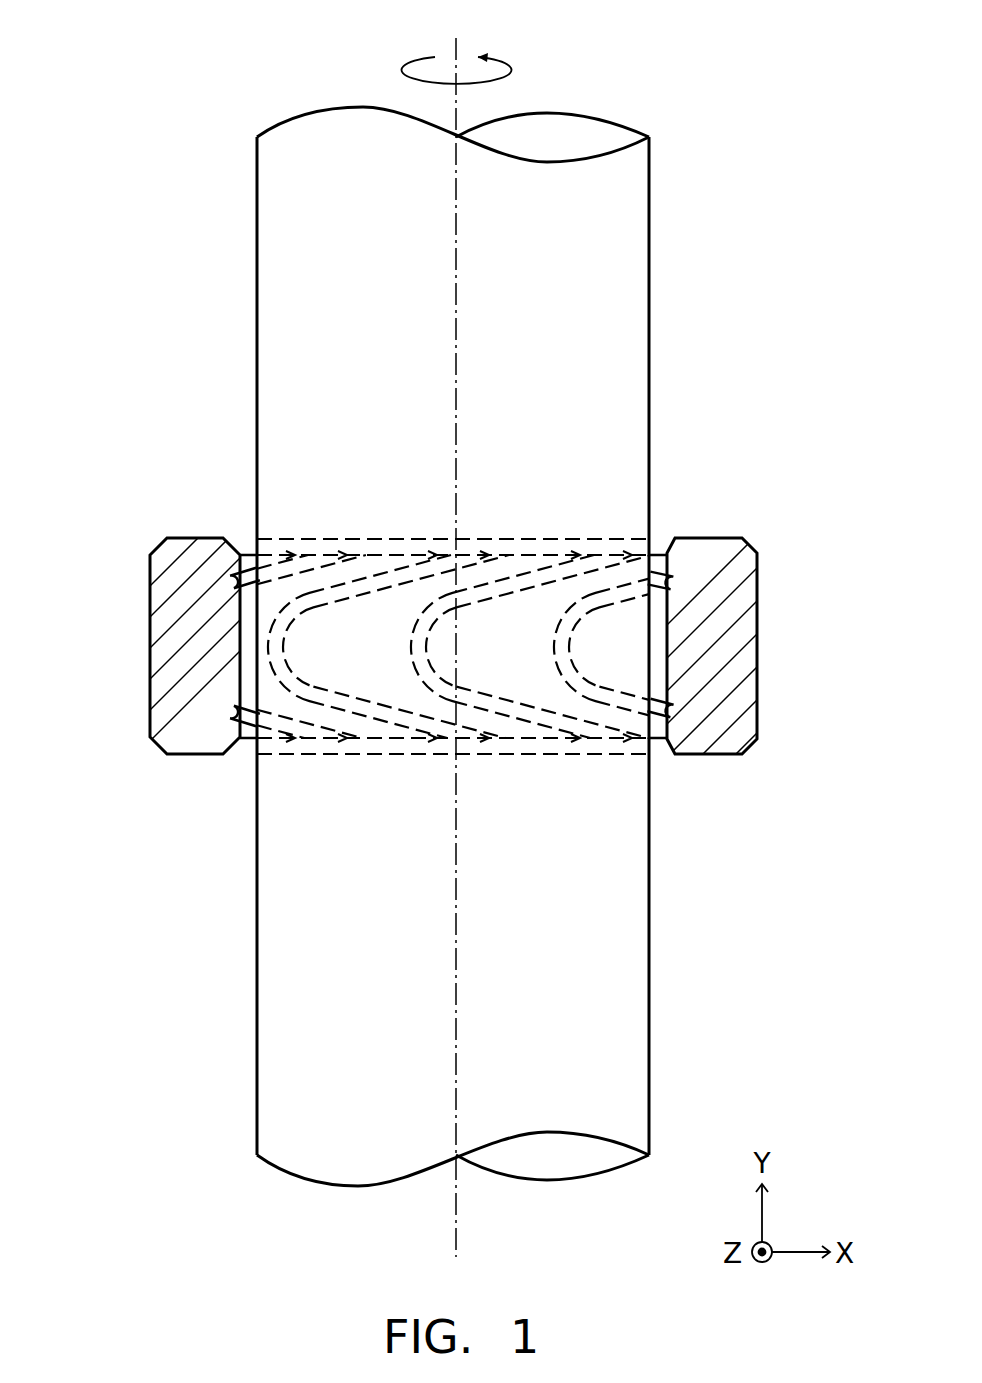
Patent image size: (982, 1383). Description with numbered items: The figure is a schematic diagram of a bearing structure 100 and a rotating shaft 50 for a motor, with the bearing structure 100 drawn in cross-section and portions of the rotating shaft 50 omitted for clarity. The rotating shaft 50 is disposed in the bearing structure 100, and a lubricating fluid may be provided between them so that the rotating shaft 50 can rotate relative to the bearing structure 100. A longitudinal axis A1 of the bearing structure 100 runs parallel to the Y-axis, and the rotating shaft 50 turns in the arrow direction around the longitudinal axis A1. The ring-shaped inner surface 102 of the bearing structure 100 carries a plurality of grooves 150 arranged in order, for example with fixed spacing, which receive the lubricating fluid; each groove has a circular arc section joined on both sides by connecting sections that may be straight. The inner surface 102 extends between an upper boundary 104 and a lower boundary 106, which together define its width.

The rotating shaft 50 is at (632, 290).
The bearing structure 100 is at (476, 644).
The inner surface 102 is at (248, 638).
The upper boundary 104 is at (247, 555).
The lower boundary 106 is at (248, 738).
The grooves 150 is at (612, 695).
The longitudinal axis A1 is at (456, 631).